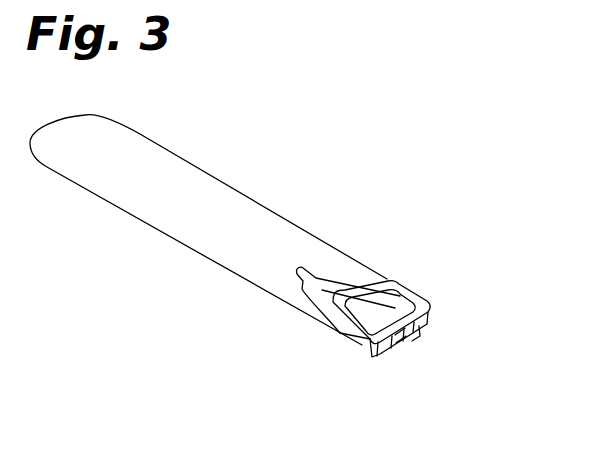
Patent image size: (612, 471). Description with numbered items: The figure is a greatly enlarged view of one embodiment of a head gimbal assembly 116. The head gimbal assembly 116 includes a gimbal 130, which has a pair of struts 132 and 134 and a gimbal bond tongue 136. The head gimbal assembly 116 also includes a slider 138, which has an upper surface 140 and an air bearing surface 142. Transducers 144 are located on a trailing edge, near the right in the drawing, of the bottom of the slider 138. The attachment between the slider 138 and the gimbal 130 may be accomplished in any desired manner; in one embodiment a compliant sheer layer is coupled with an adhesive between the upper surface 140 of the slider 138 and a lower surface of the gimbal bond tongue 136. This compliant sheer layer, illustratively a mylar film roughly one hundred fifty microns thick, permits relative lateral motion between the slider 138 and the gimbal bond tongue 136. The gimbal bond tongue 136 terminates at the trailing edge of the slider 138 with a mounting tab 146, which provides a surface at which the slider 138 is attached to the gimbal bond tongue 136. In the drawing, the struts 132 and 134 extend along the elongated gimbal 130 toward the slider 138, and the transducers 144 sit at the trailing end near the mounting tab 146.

The head gimbal assembly 116 is at (266, 148).
The gimbal 130 is at (168, 141).
The strut 132 is at (353, 310).
The strut 134 is at (386, 314).
The gimbal bond tongue 136 is at (429, 302).
The slider 138 is at (413, 354).
The upper surface 140 is at (393, 283).
The air bearing surface 142 is at (373, 357).
The transducers 144 is at (425, 337).
The mounting tab 146 is at (338, 298).